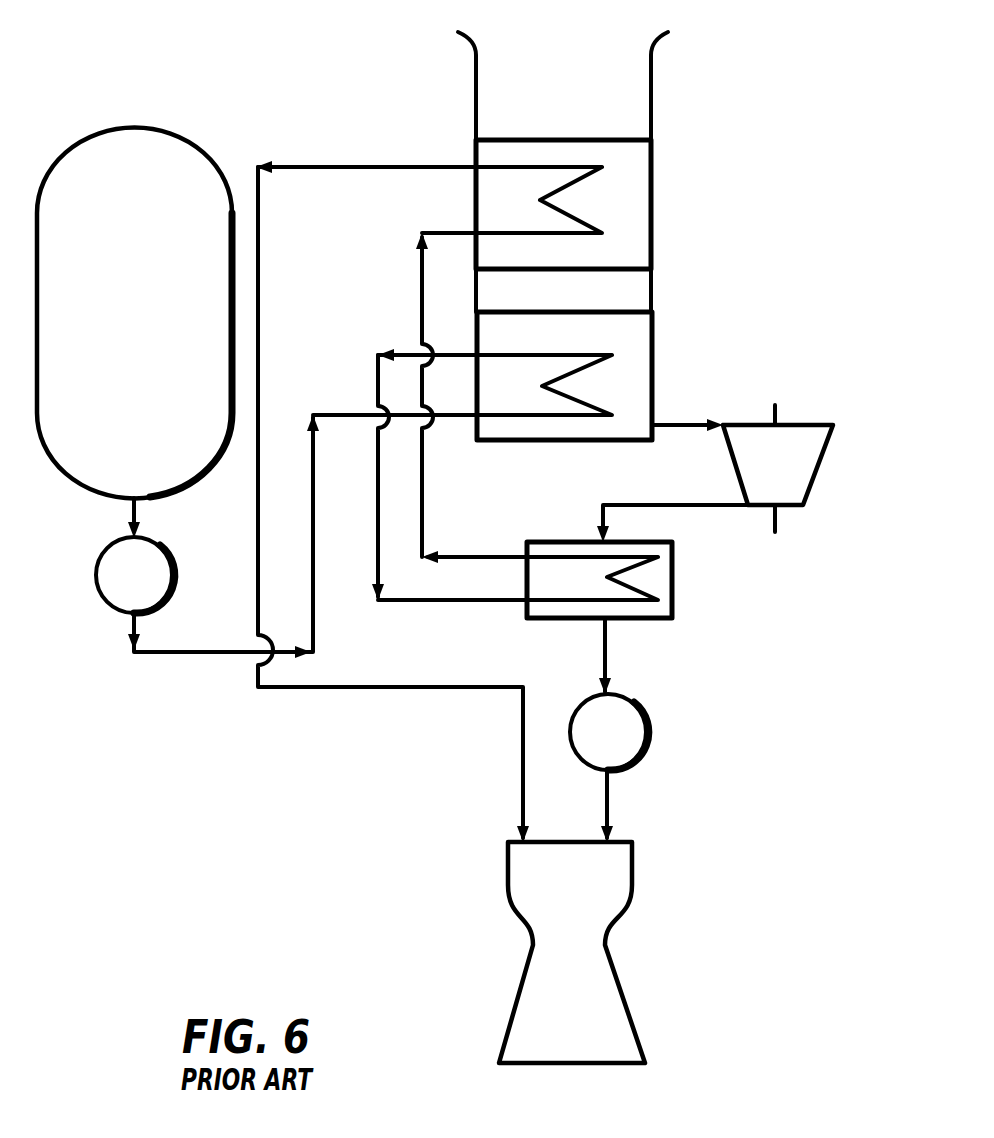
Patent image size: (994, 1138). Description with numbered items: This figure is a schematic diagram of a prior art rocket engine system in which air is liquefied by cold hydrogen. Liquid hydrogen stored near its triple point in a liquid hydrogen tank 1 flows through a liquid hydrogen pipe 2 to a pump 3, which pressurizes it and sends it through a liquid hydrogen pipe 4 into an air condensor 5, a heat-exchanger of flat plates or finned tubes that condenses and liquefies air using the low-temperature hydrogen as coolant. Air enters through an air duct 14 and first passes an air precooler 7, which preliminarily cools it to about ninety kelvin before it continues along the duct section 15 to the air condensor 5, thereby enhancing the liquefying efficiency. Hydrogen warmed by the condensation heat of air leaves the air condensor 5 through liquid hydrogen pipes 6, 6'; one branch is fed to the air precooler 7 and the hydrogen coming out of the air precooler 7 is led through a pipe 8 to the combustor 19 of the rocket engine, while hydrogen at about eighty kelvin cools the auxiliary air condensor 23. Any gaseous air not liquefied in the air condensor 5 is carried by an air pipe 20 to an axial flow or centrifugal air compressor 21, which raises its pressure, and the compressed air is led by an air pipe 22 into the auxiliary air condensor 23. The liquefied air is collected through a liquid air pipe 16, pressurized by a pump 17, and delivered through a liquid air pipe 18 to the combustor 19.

The liquid hydrogen tank 1 is at (118, 142).
The liquid hydrogen pipe 2 is at (130, 514).
The pump 3 is at (100, 584).
The liquid hydrogen pipe 4 is at (318, 562).
The air condensor 5 is at (648, 388).
The liquid hydrogen pipe 6 is at (515, 477).
The liquid hydrogen pipe 6' is at (441, 398).
The air precooler 7 is at (655, 168).
The pipe 8 is at (258, 530).
The air duct 14 is at (645, 100).
The duct section 15 is at (630, 286).
The liquid air pipe 16 is at (607, 660).
The pump 17 is at (600, 690).
The liquid air pipe 18 is at (608, 810).
The combustor 19 is at (632, 882).
The air pipe 20 is at (700, 438).
The air compressor 21 is at (812, 458).
The air pipe 22 is at (680, 510).
The auxiliary air condensor 23 is at (675, 597).